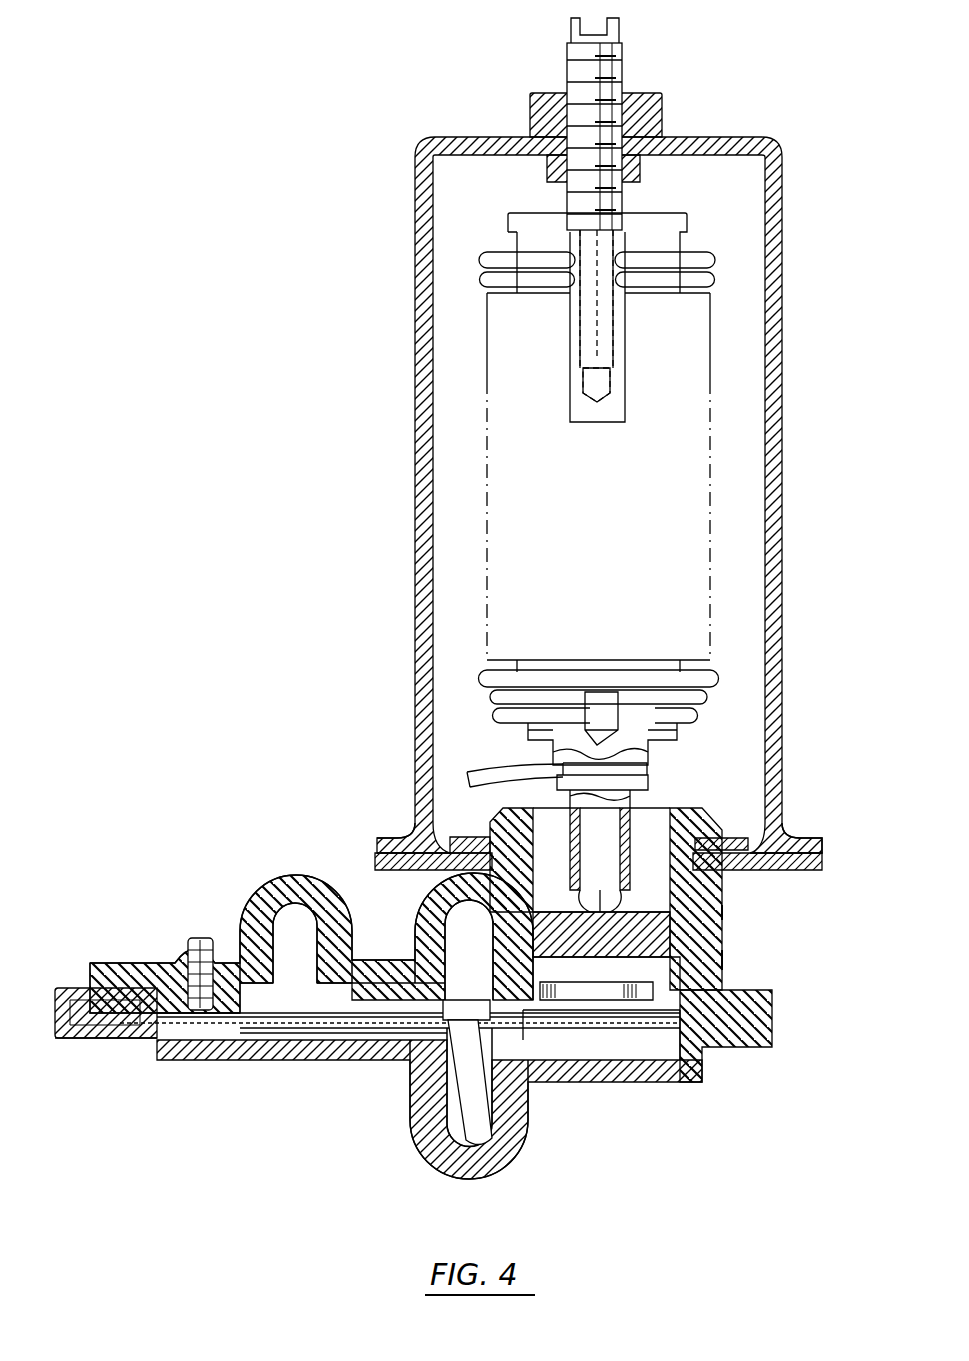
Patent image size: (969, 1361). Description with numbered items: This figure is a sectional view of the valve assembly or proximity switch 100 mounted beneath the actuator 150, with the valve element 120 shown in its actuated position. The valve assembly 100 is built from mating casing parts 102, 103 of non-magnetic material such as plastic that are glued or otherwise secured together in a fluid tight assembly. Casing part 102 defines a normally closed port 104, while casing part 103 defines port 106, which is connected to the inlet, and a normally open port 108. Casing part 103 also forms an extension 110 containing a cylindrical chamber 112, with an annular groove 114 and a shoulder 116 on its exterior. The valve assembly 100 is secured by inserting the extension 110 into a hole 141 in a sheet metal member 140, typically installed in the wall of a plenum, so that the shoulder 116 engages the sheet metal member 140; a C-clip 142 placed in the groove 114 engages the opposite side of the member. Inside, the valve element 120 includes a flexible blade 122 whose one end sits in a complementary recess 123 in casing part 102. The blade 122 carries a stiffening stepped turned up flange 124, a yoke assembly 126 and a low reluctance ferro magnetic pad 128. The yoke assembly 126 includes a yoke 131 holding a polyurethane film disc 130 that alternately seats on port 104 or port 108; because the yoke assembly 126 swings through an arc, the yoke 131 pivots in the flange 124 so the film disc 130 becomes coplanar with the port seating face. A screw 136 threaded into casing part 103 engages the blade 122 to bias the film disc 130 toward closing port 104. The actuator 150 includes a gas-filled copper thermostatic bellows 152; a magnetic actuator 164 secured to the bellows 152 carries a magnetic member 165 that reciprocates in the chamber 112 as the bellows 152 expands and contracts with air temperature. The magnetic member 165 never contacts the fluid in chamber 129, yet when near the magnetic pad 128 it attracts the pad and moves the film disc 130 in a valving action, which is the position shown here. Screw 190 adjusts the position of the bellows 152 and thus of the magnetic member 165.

The valve assembly 100 is at (392, 1173).
The casing part 102 is at (738, 1048).
The casing part 103 is at (120, 987).
The normally closed port 104 is at (455, 1082).
The port 106 is at (257, 893).
The normally open port 108 is at (418, 900).
The extension 110 is at (723, 935).
The cylindrical chamber 112 is at (723, 912).
The annular groove 114 is at (790, 845).
The shoulder 116 is at (723, 875).
The valve element 120 is at (222, 1020).
The blade 122 is at (232, 1022).
The recess 123 is at (115, 1042).
The stepped turned up flange 124 is at (326, 1022).
The yoke assembly 126 is at (512, 1147).
The ferro magnetic pad 128 is at (617, 994).
The chamber 129 is at (601, 1035).
The film disc 130 is at (528, 1100).
The yoke 131 is at (447, 1040).
The screw 136 is at (192, 940).
The sheet metal member 140 is at (410, 858).
The hole 141 is at (433, 845).
The C-clip 142 is at (730, 843).
The actuator 150 is at (362, 337).
The thermostatic bellows 152 is at (695, 352).
The magnetic actuator 164 is at (648, 848).
The magnetic member 165 is at (723, 960).
The screw 190 is at (567, 82).